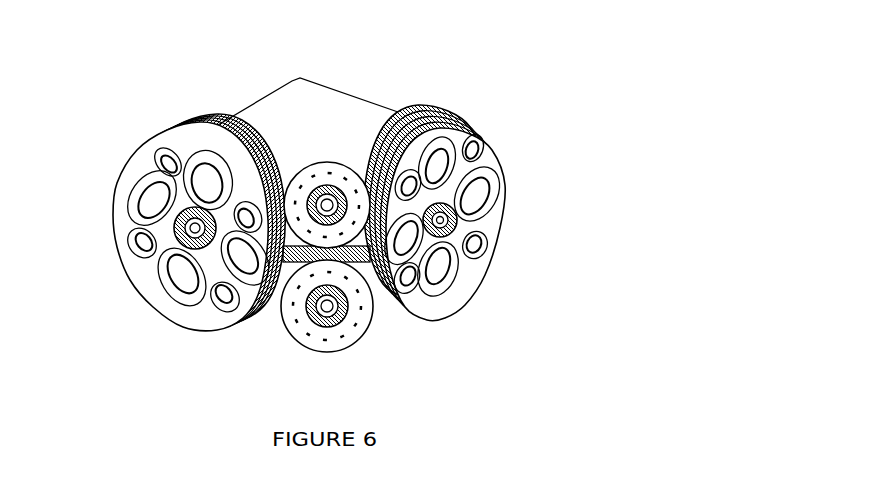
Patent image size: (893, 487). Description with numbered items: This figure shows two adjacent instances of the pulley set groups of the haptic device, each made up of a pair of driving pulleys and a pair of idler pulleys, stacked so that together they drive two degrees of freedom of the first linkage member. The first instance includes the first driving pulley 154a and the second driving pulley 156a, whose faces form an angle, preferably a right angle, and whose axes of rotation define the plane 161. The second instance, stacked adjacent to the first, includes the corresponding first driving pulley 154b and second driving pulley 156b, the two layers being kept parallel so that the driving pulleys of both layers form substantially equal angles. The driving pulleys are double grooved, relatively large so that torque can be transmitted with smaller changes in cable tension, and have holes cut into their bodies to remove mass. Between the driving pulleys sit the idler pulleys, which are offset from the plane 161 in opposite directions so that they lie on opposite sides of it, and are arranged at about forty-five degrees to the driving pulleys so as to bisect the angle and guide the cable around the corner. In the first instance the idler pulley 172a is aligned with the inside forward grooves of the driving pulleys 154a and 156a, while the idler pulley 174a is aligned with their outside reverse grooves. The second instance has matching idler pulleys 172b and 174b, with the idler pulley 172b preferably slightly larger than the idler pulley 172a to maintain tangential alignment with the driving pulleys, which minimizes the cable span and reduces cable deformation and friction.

The first driving pulley 154a is at (201, 188).
The first driving pulley 154b is at (156, 240).
The second driving pulley 156a is at (432, 177).
The second driving pulley 156b is at (477, 224).
The plane 161 is at (305, 148).
The first idler pulley 172a is at (319, 190).
The first idler pulley 172b is at (351, 136).
The second idler pulley 174a is at (305, 325).
The second idler pulley 174b is at (370, 353).